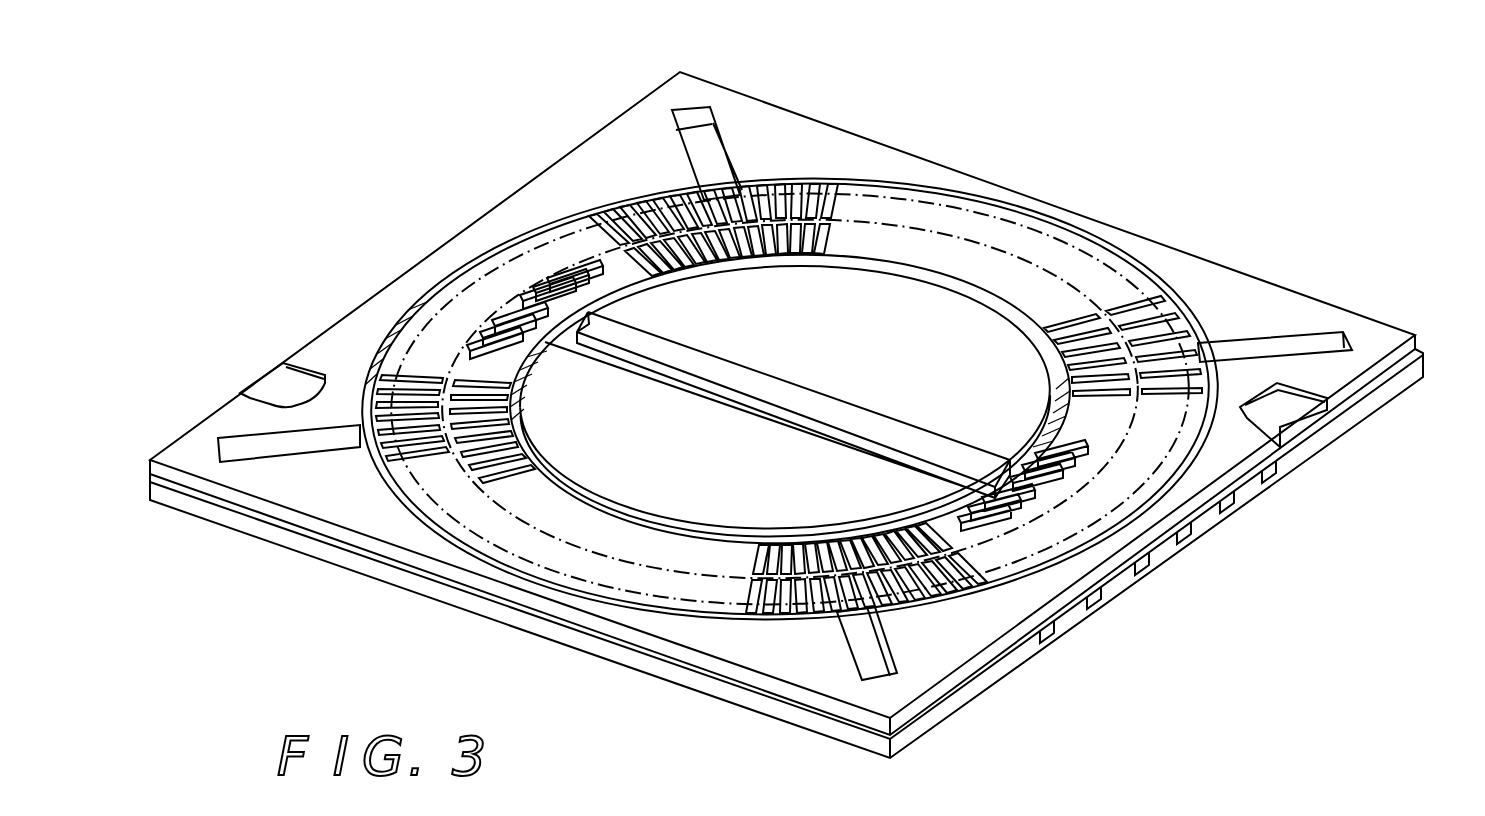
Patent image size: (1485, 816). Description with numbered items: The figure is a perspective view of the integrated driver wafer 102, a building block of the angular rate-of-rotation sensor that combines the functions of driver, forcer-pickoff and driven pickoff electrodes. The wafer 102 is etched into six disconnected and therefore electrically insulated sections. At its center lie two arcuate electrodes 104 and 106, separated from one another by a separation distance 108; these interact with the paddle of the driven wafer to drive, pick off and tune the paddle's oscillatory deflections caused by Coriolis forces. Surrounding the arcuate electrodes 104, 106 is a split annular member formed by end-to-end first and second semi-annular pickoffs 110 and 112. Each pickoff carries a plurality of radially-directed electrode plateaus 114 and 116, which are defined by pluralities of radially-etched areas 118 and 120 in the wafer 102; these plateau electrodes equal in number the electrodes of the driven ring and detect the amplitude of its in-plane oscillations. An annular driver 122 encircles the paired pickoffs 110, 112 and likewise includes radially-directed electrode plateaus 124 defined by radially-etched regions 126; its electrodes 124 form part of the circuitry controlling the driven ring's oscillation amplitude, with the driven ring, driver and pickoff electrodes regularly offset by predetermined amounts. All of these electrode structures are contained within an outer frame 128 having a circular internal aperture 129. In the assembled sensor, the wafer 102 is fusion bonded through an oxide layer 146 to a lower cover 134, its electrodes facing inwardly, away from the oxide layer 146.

The integrated driver wafer 102 is at (1420, 340).
The arcuate electrode 104 is at (692, 445).
The arcuate electrode 106 is at (900, 333).
The separation distance 108 is at (704, 378).
The first semi-annular pickoff 110 is at (540, 495).
The second semi-annular pickoff 112 is at (1050, 313).
The electrode plateaus 114 is at (767, 547).
The electrode plateaus 116 is at (820, 260).
The radially-etched areas 118 is at (807, 547).
The radially-etched areas 120 is at (741, 255).
The annular driver 122 is at (997, 233).
The electrode plateaus 124 is at (665, 226).
The radially-etched regions 126 is at (659, 235).
The outer frame 128 is at (1323, 383).
The circular internal aperture 129 is at (1207, 397).
The lower cover 134 is at (925, 724).
The oxide layer 146 is at (968, 680).